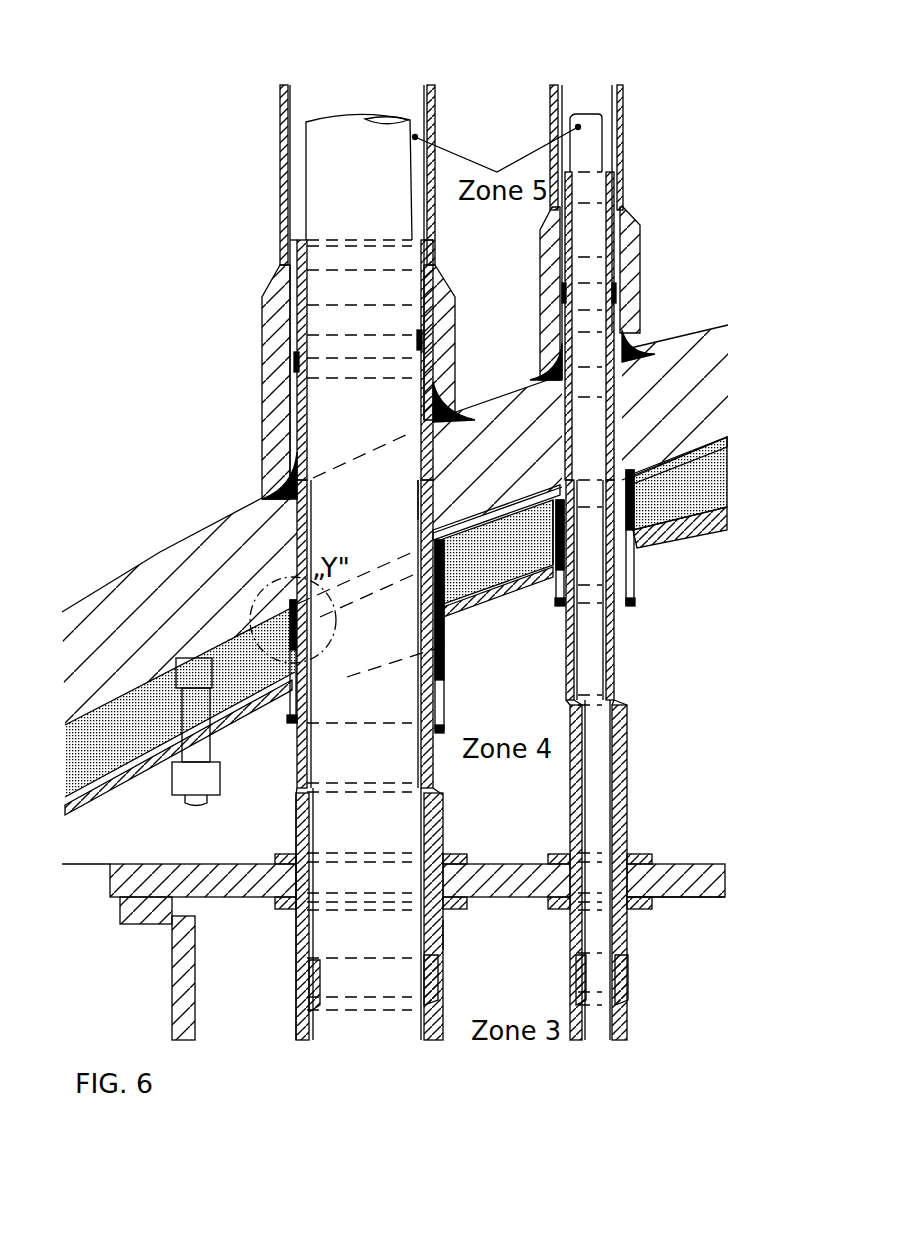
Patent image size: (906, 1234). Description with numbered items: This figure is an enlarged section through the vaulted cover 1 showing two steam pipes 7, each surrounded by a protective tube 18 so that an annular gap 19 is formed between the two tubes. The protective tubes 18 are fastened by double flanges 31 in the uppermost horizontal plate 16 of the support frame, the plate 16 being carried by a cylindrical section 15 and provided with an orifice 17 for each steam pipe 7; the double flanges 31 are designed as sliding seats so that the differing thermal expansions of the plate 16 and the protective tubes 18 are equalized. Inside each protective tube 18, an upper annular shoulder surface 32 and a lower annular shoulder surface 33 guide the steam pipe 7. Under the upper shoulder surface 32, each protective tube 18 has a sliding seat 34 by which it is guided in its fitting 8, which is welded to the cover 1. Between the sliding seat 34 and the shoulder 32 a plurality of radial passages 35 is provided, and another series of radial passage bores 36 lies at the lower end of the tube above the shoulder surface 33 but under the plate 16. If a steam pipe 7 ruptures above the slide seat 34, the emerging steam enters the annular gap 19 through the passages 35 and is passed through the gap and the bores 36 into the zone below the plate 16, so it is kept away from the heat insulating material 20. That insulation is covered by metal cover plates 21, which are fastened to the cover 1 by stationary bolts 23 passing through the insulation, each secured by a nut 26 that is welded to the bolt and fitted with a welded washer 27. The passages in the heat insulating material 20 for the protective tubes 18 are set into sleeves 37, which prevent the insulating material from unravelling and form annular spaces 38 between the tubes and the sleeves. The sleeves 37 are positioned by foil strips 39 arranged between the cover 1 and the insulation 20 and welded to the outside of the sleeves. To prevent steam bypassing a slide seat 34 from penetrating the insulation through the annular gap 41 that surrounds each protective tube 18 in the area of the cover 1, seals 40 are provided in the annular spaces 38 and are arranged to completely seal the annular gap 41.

The cover 1 is at (700, 350).
The steam pipe 7 is at (352, 153).
The fitting 8 is at (268, 290).
The cylindrical section 15 is at (182, 990).
The horizontal plate 16 is at (662, 878).
The orifice 17 is at (632, 896).
The protective tube 18 is at (430, 768).
The annular gap 19 is at (302, 430).
The heat insulating material 20 is at (668, 505).
The cover plate 21 is at (673, 527).
The stationary bolt 23 is at (178, 763).
The nut 26 is at (205, 755).
The washer 27 is at (200, 718).
The double flange 31 is at (455, 856).
The upper annular shoulder surface 32 is at (298, 322).
The lower annular shoulder surface 33 is at (303, 985).
The sliding seat 34 is at (299, 365).
The radial passage 35 is at (420, 342).
The radial passage bore 36 is at (578, 928).
The sleeve 37 is at (444, 695).
The annular space 38 is at (300, 720).
The foil strip 39 is at (693, 452).
The seal 40 is at (455, 600).
The annular gap 41 is at (420, 507).